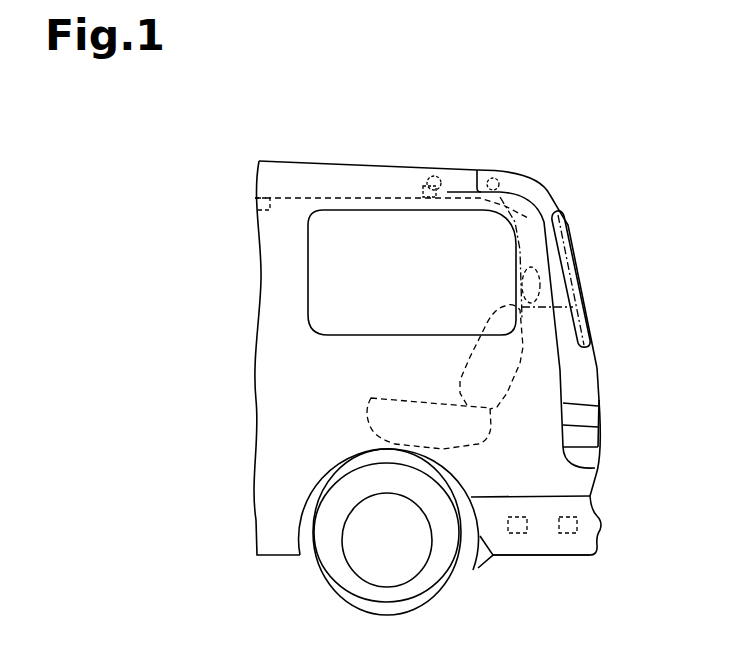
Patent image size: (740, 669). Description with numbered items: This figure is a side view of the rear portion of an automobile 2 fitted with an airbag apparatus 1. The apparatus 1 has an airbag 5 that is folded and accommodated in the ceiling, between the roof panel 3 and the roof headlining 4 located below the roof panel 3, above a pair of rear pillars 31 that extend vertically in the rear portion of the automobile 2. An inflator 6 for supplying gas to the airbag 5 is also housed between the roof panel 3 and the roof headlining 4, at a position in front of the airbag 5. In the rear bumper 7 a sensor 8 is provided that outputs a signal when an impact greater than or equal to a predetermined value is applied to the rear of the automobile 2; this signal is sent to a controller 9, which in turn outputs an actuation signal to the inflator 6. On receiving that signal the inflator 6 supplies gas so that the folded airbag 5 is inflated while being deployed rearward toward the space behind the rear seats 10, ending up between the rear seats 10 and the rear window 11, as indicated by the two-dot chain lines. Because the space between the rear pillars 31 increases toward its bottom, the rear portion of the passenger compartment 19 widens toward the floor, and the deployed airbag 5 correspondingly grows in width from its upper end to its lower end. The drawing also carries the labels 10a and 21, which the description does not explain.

The airbag apparatus 1 is at (447, 190).
The automobile 2 is at (288, 152).
The roof panel 3 is at (325, 162).
The roof headlining 4 is at (256, 207).
The airbag 5 is at (421, 182).
The inflator 6 is at (434, 175).
The rear bumper 7 is at (599, 529).
The sensor 8 is at (569, 534).
The controller 9 is at (517, 534).
The rear seats 10 is at (500, 311).
The headrest 10a is at (522, 282).
The rear window 11 is at (584, 318).
The passenger compartment 19 is at (384, 320).
The front pillar 21 is at (587, 377).
The rear pillars 31 is at (516, 238).